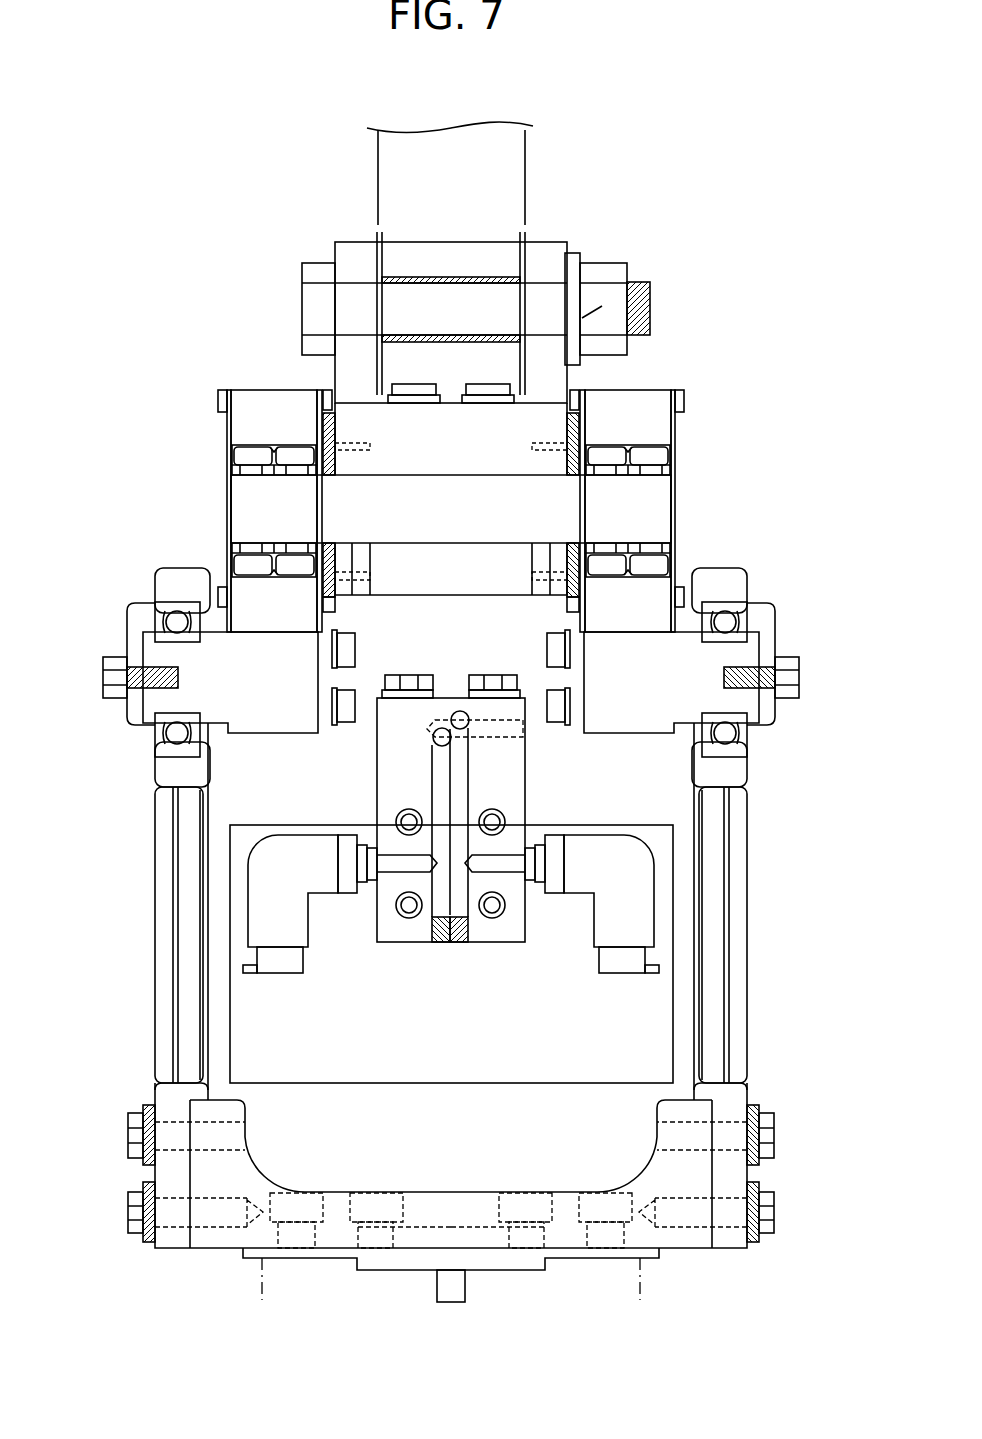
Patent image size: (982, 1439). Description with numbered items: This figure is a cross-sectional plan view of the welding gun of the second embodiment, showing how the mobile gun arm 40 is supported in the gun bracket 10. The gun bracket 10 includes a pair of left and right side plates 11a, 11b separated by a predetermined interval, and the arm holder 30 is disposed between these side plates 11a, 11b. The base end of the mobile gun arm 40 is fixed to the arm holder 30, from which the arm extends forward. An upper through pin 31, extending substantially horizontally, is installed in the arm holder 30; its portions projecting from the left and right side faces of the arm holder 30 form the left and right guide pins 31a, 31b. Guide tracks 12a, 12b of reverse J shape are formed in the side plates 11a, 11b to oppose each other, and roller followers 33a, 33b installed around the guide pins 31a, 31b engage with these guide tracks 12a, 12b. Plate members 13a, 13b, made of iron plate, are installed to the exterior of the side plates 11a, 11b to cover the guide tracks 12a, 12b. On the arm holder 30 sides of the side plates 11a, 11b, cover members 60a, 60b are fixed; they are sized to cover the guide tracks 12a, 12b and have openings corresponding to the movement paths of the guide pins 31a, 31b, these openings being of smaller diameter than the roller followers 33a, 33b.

The mobile gun arm 40 is at (510, 178).
The arm holder 30 is at (451, 582).
The through pin 31 is at (463, 526).
The guide pin 31a is at (650, 526).
The guide pin 31b is at (295, 526).
The gun bracket 10 is at (453, 499).
The side plate 11a is at (655, 395).
The side plate 11b is at (253, 395).
The guide track 12a is at (655, 452).
The guide track 12b is at (253, 452).
The plate member 13a is at (677, 487).
The plate member 13b is at (228, 487).
The roller follower 33a is at (605, 571).
The roller follower 33b is at (303, 571).
The cover member 60a is at (583, 393).
The cover member 60b is at (320, 393).